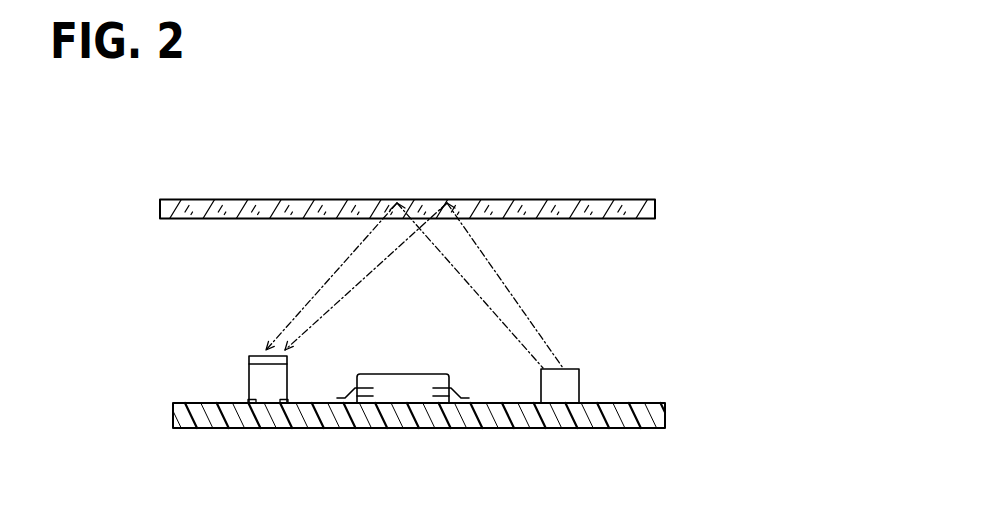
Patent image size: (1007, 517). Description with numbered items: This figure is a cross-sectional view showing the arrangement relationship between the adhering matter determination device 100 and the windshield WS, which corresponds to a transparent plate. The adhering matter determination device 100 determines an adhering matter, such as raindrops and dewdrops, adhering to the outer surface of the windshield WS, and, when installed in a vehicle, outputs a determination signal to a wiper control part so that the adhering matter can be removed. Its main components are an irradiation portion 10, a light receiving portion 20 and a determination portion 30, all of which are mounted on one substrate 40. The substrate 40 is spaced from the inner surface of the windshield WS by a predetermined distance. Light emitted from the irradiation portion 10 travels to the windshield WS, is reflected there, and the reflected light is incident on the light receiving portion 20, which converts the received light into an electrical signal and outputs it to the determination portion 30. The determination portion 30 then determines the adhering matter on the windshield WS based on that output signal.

The adhering matter determination device 100 is at (797, 104).
The irradiation portion 10 is at (541, 381).
The light receiving portion 20 is at (249, 381).
The determination portion 30 is at (402, 395).
The substrate 40 is at (207, 420).
The windshield WS is at (617, 199).